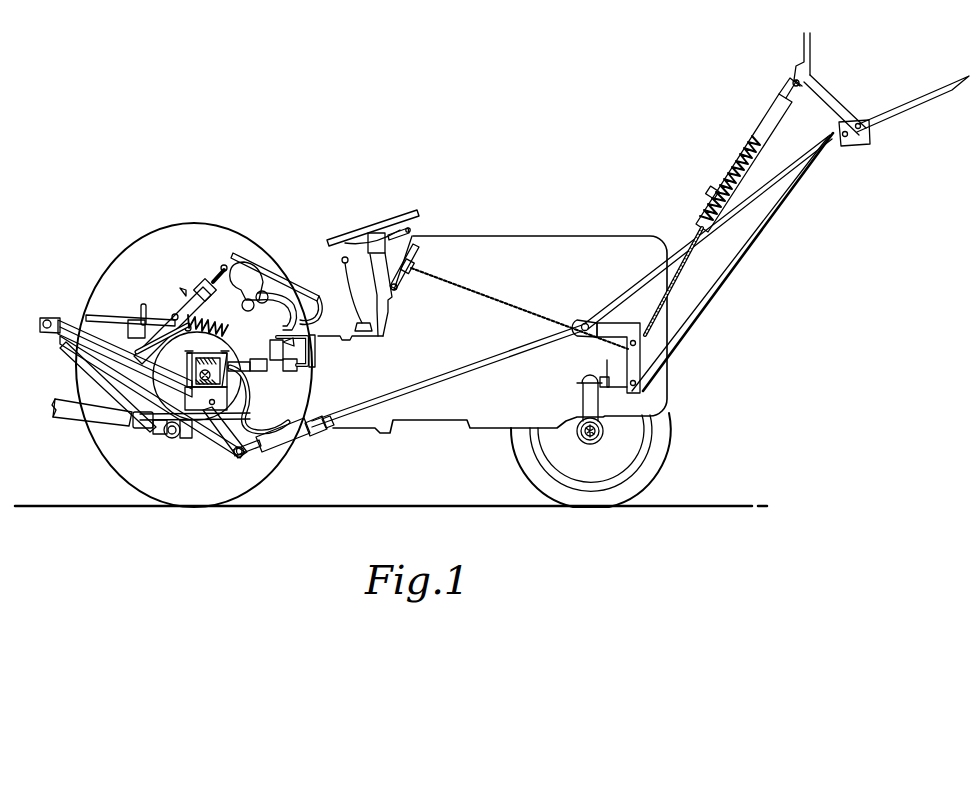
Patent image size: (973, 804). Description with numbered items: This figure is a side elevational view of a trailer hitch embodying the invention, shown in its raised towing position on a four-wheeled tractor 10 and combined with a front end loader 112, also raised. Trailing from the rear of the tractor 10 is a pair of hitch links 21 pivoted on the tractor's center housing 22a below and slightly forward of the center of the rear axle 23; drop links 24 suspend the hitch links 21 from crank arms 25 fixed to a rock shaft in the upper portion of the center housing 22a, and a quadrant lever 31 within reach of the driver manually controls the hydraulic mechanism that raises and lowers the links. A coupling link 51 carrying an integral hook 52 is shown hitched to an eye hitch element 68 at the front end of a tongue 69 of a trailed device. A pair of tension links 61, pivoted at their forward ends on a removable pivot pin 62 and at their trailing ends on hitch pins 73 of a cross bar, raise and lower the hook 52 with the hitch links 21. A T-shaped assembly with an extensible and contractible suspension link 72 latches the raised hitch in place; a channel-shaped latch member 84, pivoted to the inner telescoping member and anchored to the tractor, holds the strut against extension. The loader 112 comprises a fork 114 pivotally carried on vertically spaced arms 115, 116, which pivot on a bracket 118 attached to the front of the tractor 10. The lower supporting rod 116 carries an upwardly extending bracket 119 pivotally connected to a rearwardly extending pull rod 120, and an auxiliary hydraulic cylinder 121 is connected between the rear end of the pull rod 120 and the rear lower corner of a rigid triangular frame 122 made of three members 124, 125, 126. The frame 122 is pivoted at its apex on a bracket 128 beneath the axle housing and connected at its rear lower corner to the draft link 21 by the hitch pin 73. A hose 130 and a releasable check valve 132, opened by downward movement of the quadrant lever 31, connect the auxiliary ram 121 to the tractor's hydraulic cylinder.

The tractor 10 is at (511, 235).
The hitch links 21 is at (173, 340).
The center housing 22a is at (232, 328).
The rear axle 23 is at (217, 373).
The drop links 24 is at (197, 300).
The crank arms 25 is at (234, 303).
The quadrant lever 31 is at (278, 283).
The coupling link 51 is at (197, 433).
The hook 52 is at (153, 434).
The tension links 61 is at (122, 386).
The pivot pin 62 is at (172, 438).
The eye hitch element 68 is at (143, 424).
The tongue 69 is at (67, 413).
The suspension link 72 is at (113, 317).
The hitch pins 73 is at (40, 322).
The latch member 84 is at (157, 320).
The front end loader 112 is at (714, 297).
The fork 114 is at (913, 108).
The arm 115 is at (763, 131).
The lower supporting rod 116 is at (776, 215).
The bracket 118 is at (617, 381).
The bracket 119 is at (654, 273).
The pull rod 120 is at (467, 368).
The auxiliary hydraulic cylinder 121 is at (286, 437).
The triangular frame 122 is at (215, 439).
The member 124 is at (103, 360).
The member 125 is at (78, 328).
The member 126 is at (257, 427).
The bracket 128 is at (220, 395).
The hose 130 is at (262, 431).
The releasable check valve 132 is at (313, 352).